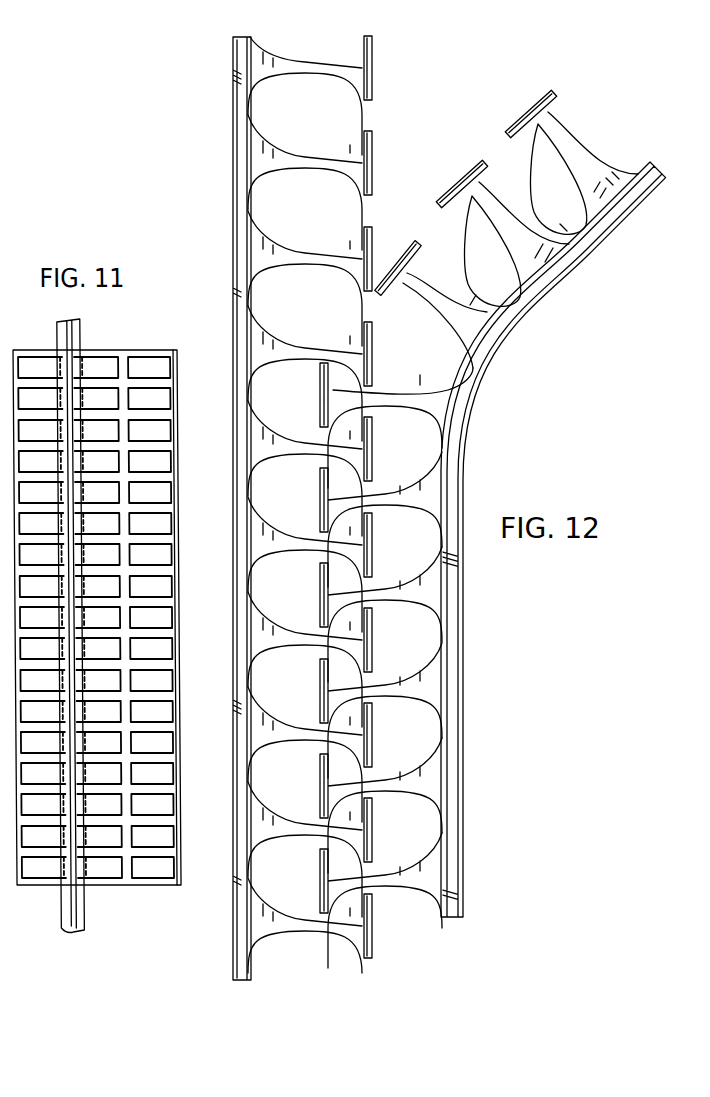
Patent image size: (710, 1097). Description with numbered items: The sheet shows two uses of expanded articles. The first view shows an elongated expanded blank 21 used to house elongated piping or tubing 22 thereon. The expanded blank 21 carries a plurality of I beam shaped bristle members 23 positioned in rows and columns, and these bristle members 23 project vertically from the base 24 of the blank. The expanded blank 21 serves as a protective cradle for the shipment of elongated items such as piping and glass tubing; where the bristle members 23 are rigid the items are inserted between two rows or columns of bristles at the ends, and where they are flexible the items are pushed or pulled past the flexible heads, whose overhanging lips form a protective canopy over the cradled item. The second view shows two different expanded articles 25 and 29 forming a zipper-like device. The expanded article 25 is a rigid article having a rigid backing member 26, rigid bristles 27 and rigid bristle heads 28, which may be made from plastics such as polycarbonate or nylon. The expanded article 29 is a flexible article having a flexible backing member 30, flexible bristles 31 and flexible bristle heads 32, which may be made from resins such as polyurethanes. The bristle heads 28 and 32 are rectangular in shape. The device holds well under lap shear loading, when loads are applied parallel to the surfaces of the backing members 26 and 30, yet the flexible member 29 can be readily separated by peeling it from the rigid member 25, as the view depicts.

In FIG. 11, the expanded blank 21 is at (178, 350).
In FIG. 11, the piping or tubing 22 is at (80, 326).
In FIG. 11, the bristle member 23 is at (163, 403).
In FIG. 11, the base 24 is at (175, 541).
In FIG. 12, the expanded article 25 is at (267, 51).
In FIG. 12, the backing member 26 is at (232, 144).
In FIG. 12, the bristle 27 is at (322, 164).
In FIG. 12, the bristle head 28 is at (372, 138).
In FIG. 12, the expanded article 29 is at (622, 170).
In FIG. 12, the backing member 30 is at (558, 270).
In FIG. 12, the bristle 31 is at (514, 212).
In FIG. 12, the bristle head 32 is at (486, 164).